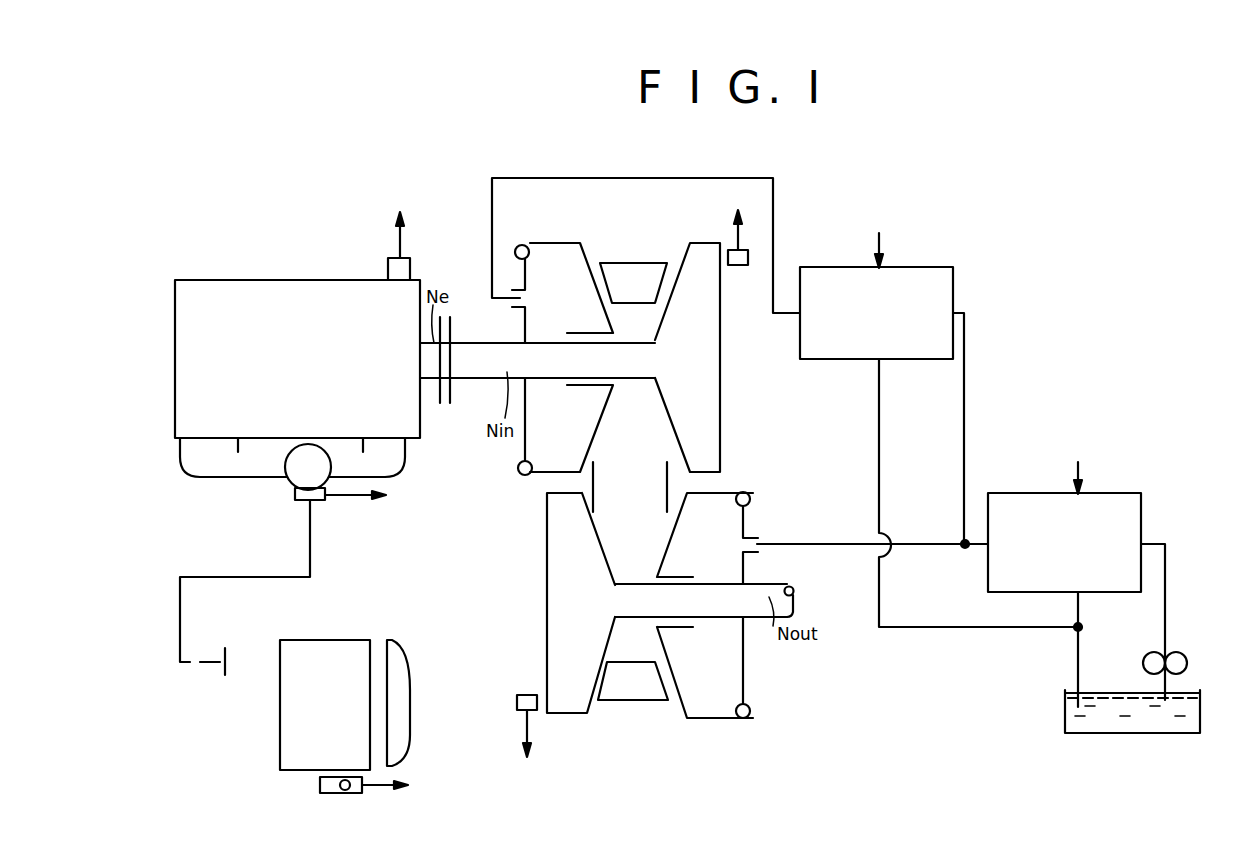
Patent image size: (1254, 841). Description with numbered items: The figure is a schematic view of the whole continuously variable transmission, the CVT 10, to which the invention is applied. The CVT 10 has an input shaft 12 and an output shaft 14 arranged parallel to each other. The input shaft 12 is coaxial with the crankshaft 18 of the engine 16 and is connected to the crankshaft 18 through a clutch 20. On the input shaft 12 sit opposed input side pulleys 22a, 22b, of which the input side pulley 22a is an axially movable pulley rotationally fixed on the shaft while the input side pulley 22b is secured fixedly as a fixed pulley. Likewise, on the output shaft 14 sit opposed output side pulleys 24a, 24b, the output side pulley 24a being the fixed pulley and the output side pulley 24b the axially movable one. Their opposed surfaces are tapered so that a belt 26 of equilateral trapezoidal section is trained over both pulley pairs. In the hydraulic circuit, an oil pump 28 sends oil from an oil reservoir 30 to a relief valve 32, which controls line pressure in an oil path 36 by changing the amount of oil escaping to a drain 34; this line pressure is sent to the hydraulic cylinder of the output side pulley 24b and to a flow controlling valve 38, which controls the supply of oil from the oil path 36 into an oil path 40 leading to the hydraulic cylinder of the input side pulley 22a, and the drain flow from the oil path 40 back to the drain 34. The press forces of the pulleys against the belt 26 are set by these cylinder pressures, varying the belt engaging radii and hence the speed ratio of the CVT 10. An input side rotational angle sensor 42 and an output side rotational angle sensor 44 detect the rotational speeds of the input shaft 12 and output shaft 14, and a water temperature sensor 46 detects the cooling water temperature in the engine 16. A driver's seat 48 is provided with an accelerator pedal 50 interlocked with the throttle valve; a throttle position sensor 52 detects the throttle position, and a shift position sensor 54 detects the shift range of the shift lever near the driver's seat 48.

The CVT 10 is at (690, 200).
The input shaft 12 is at (473, 358).
The output shaft 14 is at (757, 600).
The engine 16 is at (275, 298).
The crankshaft 18 is at (435, 385).
The clutch 20 is at (456, 343).
The input side pulley 22a is at (548, 253).
The input side pulley 22b is at (697, 446).
The output side pulley 24a is at (568, 690).
The output side pulley 24b is at (713, 690).
The belt 26 is at (632, 278).
The oil pump 28 is at (1186, 670).
The oil reservoir 30 is at (1196, 717).
The relief valve 32 is at (1108, 493).
The drain 34 is at (1075, 672).
The oil path 36 is at (967, 473).
The flow controlling valve 38 is at (953, 300).
The oil path 40 is at (773, 238).
The input side rotational angle sensor 42 is at (737, 266).
The output side rotational angle sensor 44 is at (517, 702).
The water temperature sensor 46 is at (388, 268).
The driver's seat 48 is at (328, 670).
The accelerator pedal 50 is at (228, 662).
The throttle position sensor 52 is at (290, 484).
The shift position sensor 54 is at (320, 783).